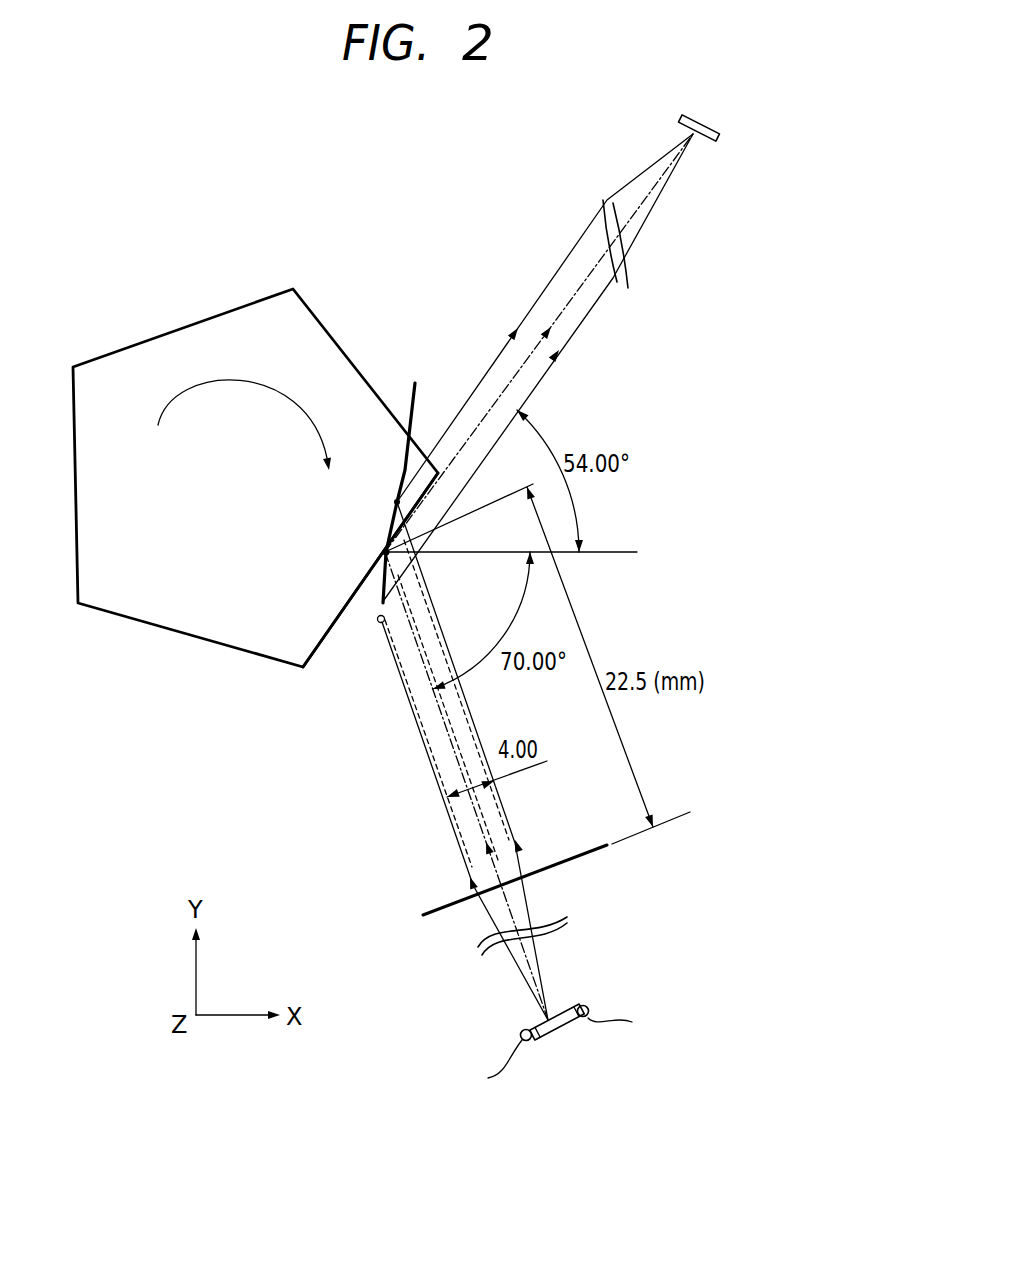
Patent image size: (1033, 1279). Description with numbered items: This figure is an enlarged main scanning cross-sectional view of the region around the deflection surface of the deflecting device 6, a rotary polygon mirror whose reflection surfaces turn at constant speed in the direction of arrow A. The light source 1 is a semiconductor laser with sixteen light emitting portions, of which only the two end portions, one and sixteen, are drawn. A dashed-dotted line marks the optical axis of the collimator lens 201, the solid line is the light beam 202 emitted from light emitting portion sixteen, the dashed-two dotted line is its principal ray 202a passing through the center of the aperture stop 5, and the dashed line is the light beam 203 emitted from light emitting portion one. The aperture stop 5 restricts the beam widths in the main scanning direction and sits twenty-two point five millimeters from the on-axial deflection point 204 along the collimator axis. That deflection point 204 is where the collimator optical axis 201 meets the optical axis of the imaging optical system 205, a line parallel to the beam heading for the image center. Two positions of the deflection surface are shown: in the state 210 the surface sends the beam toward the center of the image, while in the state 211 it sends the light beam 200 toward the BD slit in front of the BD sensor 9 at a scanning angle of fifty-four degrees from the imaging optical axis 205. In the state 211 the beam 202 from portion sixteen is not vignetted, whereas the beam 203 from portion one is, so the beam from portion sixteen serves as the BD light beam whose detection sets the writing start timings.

The light source 1 is at (540, 1026).
The aperture stop 5 is at (453, 903).
The deflecting device 6 is at (183, 338).
The BD sensor 9 is at (708, 126).
The light beam 200 is at (566, 262).
The optical axis of the collimator lens 201 is at (378, 622).
The light beam emitted from the light emitting portion 16 202 is at (433, 588).
The principal ray 202a is at (414, 620).
The light beam emitted from the light emitting portion 1 203 is at (404, 687).
The on-axial deflection point 204 is at (379, 553).
The optical axis of the imaging optical system 205 is at (613, 555).
The state of the deflection surface 210 is at (328, 617).
The state of the deflection surface 211 is at (410, 393).